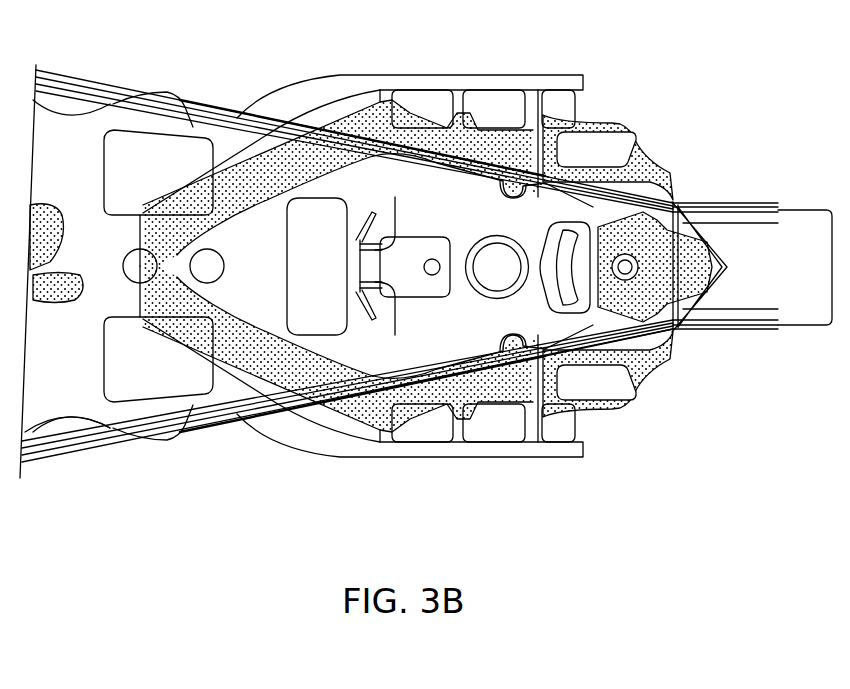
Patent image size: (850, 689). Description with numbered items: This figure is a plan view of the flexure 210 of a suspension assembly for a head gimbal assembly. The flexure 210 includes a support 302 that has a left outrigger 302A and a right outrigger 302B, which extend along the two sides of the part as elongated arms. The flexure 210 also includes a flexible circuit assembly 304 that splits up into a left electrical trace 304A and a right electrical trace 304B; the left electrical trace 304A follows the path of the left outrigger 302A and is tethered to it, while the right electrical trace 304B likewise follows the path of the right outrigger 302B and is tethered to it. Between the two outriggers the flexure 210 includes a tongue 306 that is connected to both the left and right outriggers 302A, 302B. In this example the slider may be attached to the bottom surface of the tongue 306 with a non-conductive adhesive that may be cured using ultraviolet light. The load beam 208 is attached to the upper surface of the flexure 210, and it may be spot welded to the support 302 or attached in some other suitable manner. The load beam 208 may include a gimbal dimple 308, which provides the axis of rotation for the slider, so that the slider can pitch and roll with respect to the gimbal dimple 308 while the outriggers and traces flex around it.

The support 302 is at (73, 178).
The left outrigger 302A is at (546, 72).
The right outrigger 302B is at (543, 457).
The flexure 210 is at (652, 126).
The flexible circuit assembly 304 is at (265, 220).
The left electrical trace 304A is at (498, 182).
The right electrical trace 304B is at (322, 360).
The tongue 306 is at (386, 215).
The gimbal dimple 308 is at (507, 251).
The load beam 208 is at (660, 323).